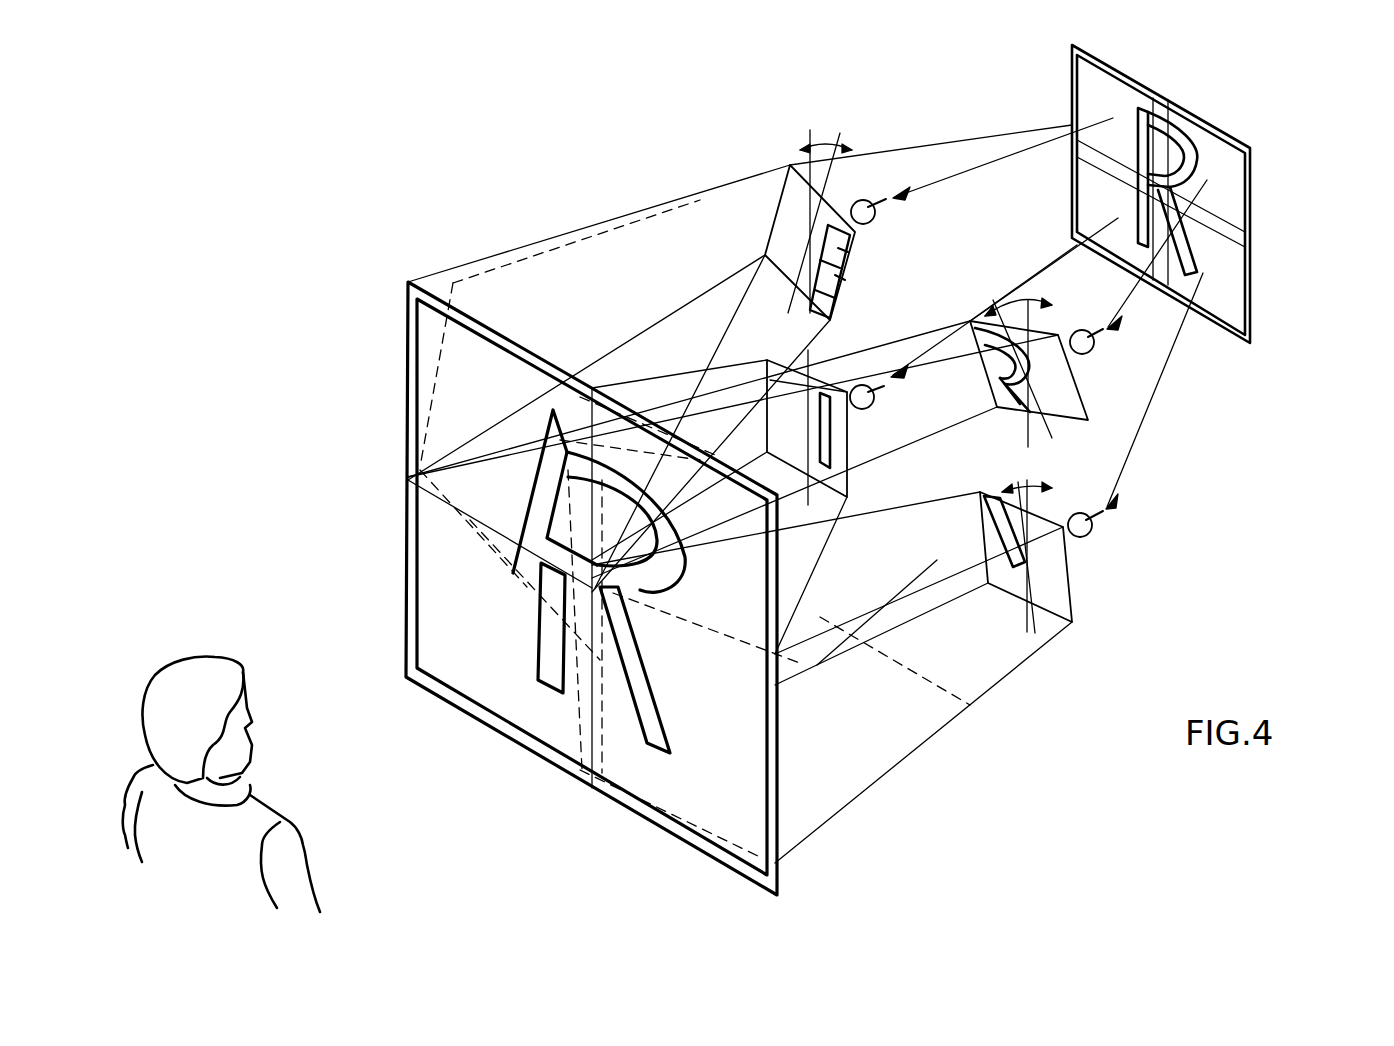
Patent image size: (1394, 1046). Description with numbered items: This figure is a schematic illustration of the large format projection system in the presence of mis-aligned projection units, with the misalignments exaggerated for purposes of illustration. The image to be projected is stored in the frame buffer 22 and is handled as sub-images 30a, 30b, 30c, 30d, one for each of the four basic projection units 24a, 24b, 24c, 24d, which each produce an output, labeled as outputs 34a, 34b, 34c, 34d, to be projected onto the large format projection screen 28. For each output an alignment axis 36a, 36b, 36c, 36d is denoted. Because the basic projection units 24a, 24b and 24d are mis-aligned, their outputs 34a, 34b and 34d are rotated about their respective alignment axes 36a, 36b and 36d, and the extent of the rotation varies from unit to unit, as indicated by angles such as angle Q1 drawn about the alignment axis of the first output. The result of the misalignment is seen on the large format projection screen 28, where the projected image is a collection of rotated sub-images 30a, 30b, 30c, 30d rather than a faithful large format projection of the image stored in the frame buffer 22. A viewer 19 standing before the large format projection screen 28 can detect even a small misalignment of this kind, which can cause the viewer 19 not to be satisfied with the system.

The viewer 19 is at (290, 870).
The frame buffer 22 is at (1170, 216).
The basic projection unit 24a is at (868, 200).
The basic projection unit 24b is at (1090, 356).
The basic projection unit 24c is at (868, 410).
The basic projection unit 24d is at (1092, 538).
The large format projection screen 28 is at (783, 893).
The image sub-region a 30a is at (1117, 93).
The image sub-region b 30b is at (1238, 195).
The image sub-region c 30c is at (1102, 190).
The image sub-region d 30d is at (1240, 294).
The output of basic projection unit 34a is at (845, 275).
The output of basic projection unit 34b is at (1042, 332).
The output of basic projection unit 34c is at (833, 365).
The output of basic projection unit 34d is at (1073, 597).
The alignment axis 36a is at (808, 162).
The alignment axis 36b is at (1018, 303).
The alignment axis 36c is at (812, 373).
The alignment axis 36d is at (1027, 503).
The angle of rotation Q1 is at (826, 129).